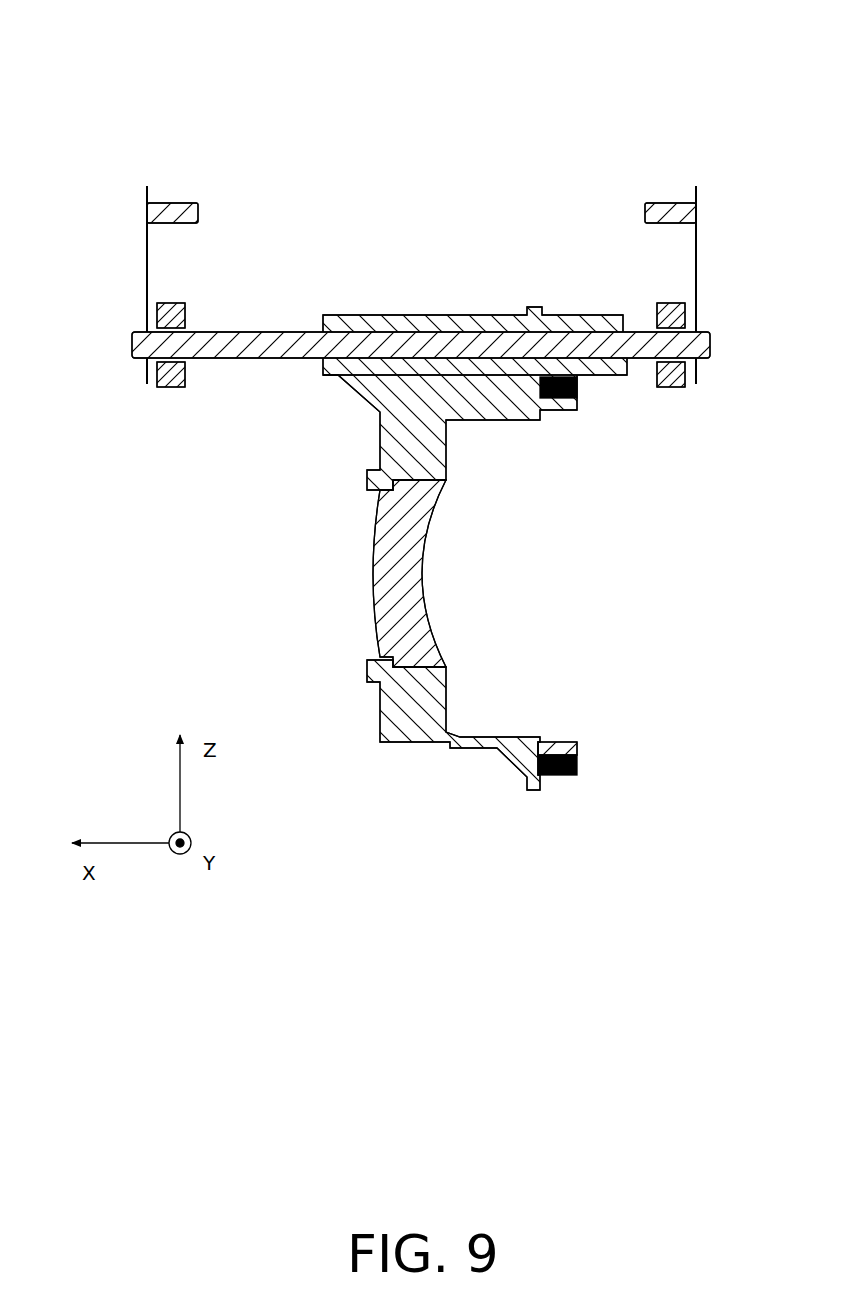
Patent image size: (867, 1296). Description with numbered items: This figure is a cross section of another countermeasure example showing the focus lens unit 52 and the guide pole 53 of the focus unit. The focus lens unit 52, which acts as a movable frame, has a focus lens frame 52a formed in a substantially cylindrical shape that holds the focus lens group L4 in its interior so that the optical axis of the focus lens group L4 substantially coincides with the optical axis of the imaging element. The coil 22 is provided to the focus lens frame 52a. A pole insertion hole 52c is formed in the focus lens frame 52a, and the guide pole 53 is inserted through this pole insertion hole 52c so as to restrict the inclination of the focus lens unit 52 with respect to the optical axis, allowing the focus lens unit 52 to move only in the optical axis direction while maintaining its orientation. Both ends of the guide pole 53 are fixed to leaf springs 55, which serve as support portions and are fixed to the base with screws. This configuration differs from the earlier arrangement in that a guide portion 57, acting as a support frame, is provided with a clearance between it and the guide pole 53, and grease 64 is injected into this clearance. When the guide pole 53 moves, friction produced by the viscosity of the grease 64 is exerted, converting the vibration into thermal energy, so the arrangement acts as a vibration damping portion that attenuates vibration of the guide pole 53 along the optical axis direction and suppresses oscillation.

The focus lens unit 52 is at (210, 117).
The focus lens frame 52a is at (412, 722).
The pole insertion hole 52c is at (327, 330).
The guide pole 53 is at (267, 360).
The leaf spring 55 is at (147, 250).
The guide portion 57 is at (182, 377).
The grease 64 is at (145, 358).
The coil 22 is at (560, 773).
The focus lens group L4 is at (400, 558).